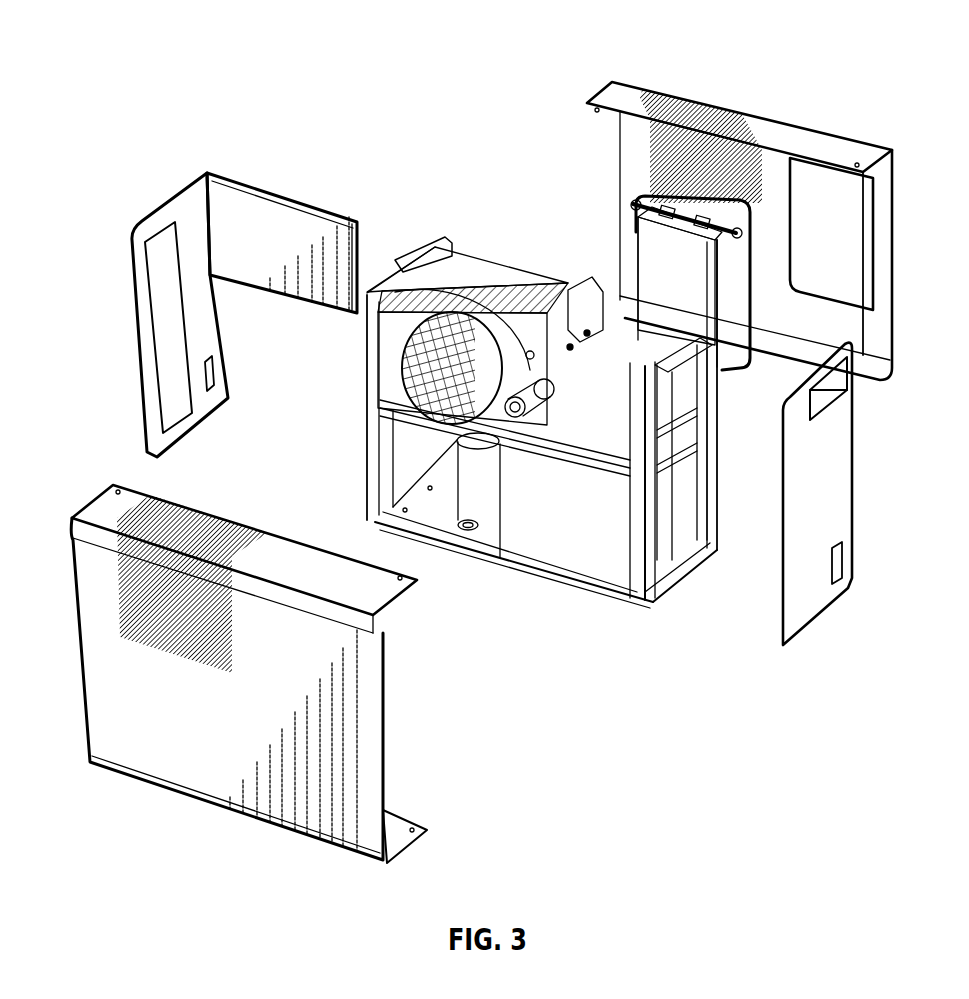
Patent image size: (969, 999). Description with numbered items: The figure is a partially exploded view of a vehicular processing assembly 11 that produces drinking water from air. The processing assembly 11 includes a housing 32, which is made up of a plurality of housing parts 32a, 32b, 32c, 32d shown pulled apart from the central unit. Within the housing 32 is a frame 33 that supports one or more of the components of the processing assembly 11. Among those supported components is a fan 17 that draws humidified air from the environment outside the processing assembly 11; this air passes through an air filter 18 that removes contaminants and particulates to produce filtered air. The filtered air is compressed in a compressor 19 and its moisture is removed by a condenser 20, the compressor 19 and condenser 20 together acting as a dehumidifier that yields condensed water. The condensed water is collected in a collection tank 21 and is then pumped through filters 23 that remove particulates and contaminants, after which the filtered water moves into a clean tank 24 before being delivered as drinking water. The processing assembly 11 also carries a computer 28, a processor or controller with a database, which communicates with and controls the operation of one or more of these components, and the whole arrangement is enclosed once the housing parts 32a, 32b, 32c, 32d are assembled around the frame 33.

The processing assembly 11 is at (334, 40).
The fan 17 is at (445, 292).
The air filter 18 is at (580, 297).
The compressor 19 is at (480, 513).
The condenser 20 is at (566, 287).
The collection tank 21 is at (605, 562).
The filters 23 is at (647, 232).
The clean tank 24 is at (625, 347).
The computer 28 is at (687, 363).
The housing 32 is at (821, 82).
The housing part 32a is at (840, 134).
The housing part 32b is at (170, 200).
The housing part 32c is at (80, 660).
The housing part 32d is at (800, 610).
The frame 33 is at (654, 601).